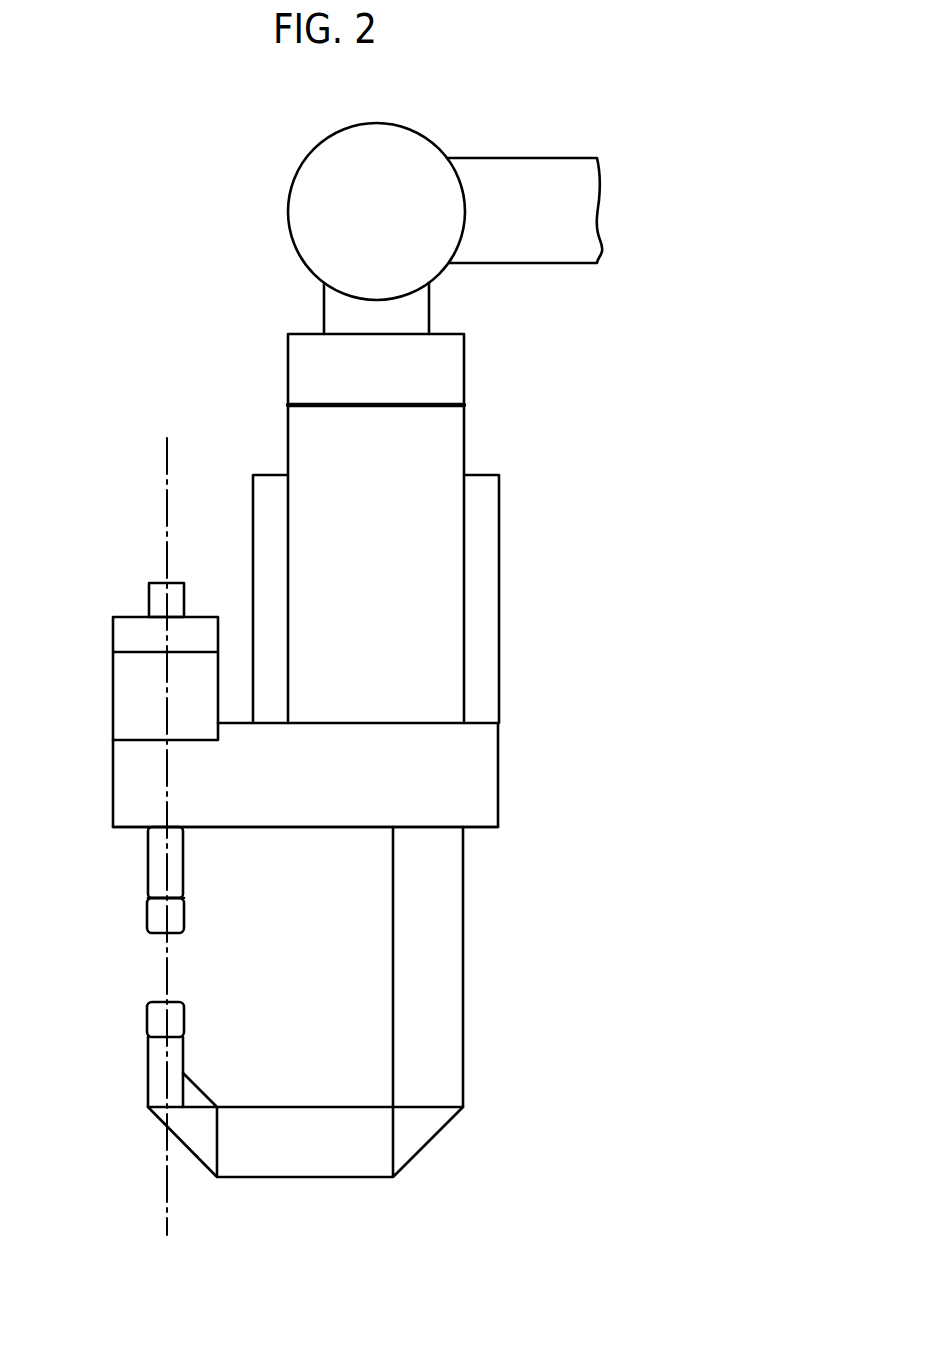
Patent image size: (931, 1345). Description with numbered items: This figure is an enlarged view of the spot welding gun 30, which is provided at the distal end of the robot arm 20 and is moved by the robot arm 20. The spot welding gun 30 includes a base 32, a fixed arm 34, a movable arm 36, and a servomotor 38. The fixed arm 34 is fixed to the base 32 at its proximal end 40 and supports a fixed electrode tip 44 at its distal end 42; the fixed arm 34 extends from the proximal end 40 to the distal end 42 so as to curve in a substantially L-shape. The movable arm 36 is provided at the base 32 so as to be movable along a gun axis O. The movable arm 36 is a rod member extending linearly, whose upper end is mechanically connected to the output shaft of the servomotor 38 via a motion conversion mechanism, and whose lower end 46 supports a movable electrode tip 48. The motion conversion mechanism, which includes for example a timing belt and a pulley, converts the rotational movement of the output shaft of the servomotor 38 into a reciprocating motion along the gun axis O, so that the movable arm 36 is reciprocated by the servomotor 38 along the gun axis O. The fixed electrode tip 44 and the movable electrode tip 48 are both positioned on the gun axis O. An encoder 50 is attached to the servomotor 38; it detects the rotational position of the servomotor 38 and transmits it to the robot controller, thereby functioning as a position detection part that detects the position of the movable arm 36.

The robot arm 20 is at (528, 177).
The spot welding gun 30 is at (210, 325).
The base 32 is at (498, 743).
The fixed arm 34 is at (445, 1003).
The movable arm 36 is at (157, 867).
The servomotor 38 is at (113, 640).
The proximal end 40 is at (428, 827).
The distal end 42 is at (158, 1034).
The fixed electrode tip 44 is at (157, 1013).
The lower end 46 is at (172, 898).
The movable electrode tip 48 is at (155, 915).
The encoder 50 is at (149, 588).
The gun axis O is at (167, 507).